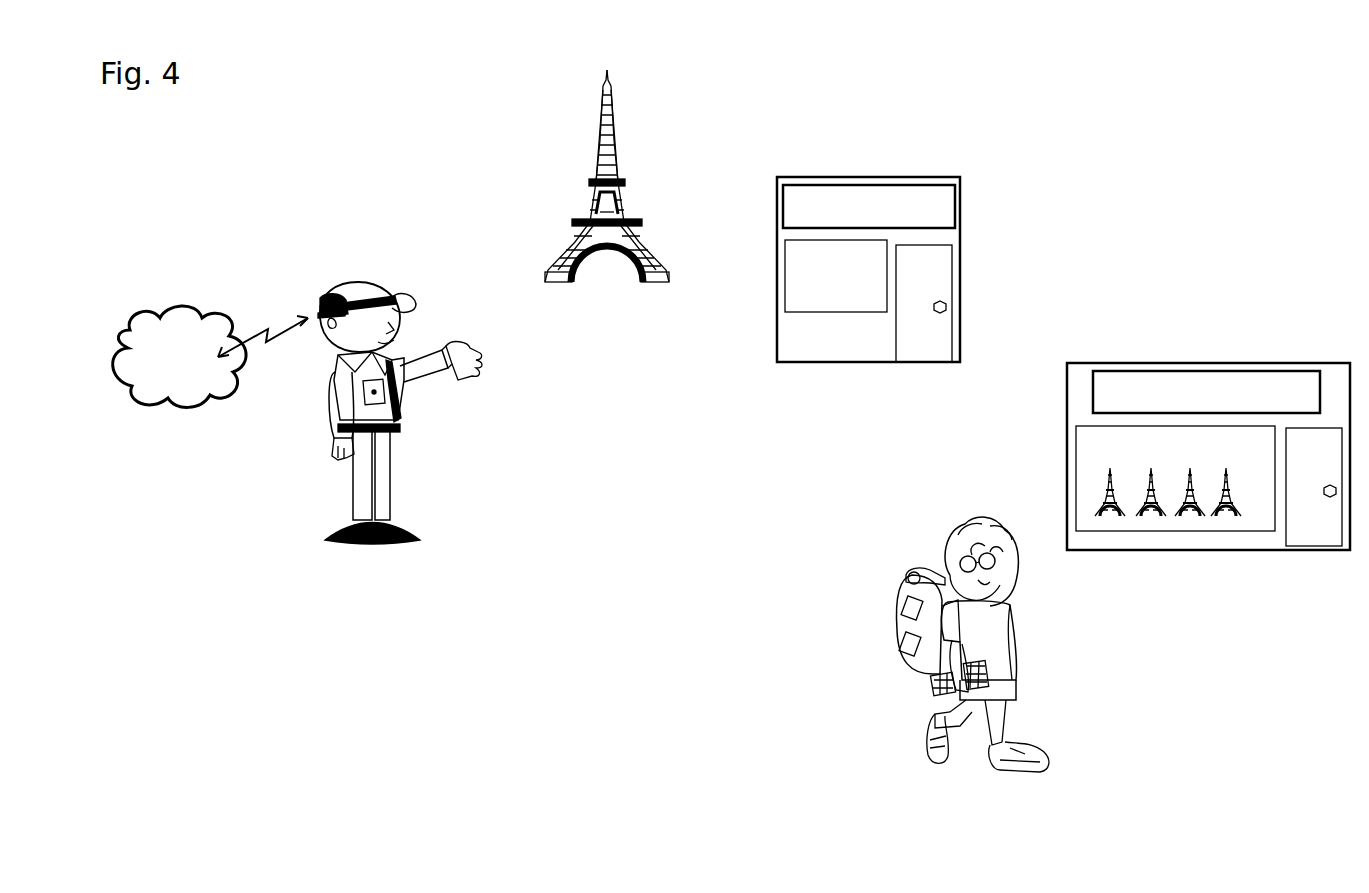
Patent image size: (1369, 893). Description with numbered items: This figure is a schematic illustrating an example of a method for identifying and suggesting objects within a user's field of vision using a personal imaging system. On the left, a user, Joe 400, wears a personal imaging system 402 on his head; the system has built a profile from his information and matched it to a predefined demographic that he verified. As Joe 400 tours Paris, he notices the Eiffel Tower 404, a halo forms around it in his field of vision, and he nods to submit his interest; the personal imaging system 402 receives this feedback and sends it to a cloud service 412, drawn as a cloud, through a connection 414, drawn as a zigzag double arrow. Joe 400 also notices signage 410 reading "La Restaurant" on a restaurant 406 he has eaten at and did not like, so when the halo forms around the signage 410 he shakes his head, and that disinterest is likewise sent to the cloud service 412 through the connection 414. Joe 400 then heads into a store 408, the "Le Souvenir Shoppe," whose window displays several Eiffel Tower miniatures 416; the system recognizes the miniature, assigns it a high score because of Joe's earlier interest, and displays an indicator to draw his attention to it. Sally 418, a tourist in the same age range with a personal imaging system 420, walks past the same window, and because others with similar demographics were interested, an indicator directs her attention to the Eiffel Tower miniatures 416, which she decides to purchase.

The Joe 400 is at (318, 300).
The personal imaging system 402 is at (384, 298).
The Eiffel Tower 404 is at (594, 128).
The restaurant 406 is at (787, 176).
The store 408 is at (1078, 363).
The signage 410 is at (905, 197).
The cloud service 412 is at (152, 326).
The connection 414 is at (260, 325).
The Eiffel Tower miniature 416 is at (1108, 497).
The Sally 418 is at (906, 570).
The personal imaging system 420 is at (976, 555).